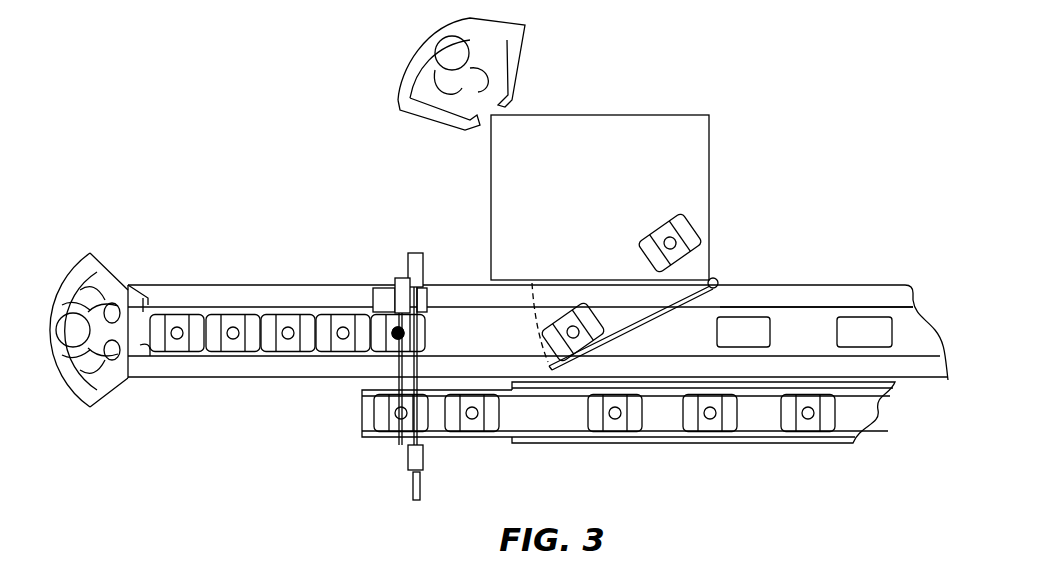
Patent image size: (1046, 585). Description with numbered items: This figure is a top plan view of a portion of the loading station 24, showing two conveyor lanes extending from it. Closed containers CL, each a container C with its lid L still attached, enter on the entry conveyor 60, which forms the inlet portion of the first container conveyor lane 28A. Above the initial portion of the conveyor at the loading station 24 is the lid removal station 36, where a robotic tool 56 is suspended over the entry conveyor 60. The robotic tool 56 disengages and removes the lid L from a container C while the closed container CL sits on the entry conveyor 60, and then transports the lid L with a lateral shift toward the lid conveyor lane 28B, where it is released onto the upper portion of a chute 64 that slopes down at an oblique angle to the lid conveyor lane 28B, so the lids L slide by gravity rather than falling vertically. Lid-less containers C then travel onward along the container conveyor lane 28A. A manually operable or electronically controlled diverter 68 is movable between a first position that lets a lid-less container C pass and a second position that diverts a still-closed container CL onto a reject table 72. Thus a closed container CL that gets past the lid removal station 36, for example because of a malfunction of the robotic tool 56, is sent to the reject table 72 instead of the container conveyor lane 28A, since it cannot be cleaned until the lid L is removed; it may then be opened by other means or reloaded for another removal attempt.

The loading station 24 is at (153, 208).
The lid removal station 36 is at (363, 316).
The robotic tool 56 is at (378, 300).
The entry conveyor 60 is at (250, 356).
The chute 64 is at (532, 417).
The diverter 68 is at (703, 298).
The reject table 72 is at (638, 147).
The first container conveyor lane 28A is at (907, 330).
The lid conveyor lane 28B is at (852, 420).
The container C is at (770, 330).
The lid L is at (393, 421).
The container with lid attached CL is at (340, 320).